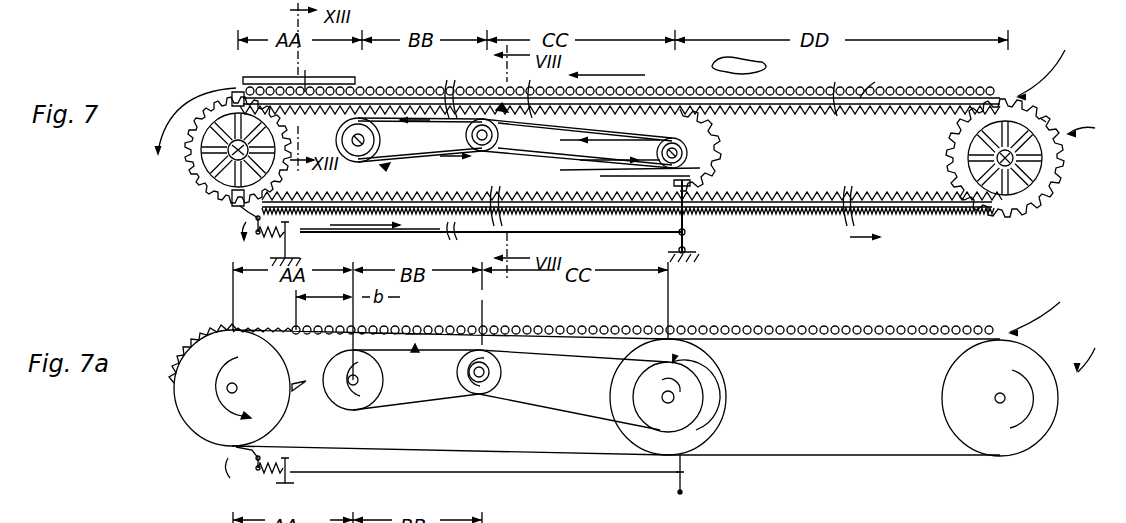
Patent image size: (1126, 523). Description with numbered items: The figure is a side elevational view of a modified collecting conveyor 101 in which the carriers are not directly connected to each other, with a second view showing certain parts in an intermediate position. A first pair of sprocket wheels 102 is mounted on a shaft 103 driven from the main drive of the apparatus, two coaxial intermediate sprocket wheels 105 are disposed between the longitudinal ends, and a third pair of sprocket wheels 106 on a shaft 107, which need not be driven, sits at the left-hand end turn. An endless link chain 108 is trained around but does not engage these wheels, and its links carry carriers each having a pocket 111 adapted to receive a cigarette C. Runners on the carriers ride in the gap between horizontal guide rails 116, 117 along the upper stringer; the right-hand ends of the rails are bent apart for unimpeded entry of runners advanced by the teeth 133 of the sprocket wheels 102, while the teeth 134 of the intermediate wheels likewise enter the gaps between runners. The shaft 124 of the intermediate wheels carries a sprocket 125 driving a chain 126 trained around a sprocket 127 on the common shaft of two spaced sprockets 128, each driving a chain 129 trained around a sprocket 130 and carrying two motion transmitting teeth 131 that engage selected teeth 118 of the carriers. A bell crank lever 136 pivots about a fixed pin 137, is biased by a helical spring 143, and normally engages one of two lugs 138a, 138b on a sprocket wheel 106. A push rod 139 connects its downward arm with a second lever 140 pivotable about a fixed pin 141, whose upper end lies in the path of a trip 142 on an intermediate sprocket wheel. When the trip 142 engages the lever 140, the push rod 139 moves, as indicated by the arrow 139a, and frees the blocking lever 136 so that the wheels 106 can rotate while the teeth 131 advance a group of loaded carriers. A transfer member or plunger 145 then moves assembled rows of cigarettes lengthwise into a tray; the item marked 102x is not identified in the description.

In FIG. 7, the collecting conveyor 101 is at (1088, 136).
In FIG. 7a, the collecting conveyor 101 is at (1086, 354).
In FIG. 7, the sprocket wheels 102 is at (1060, 158).
In FIG. 7a, the sprocket wheels 102 is at (1058, 408).
In FIG. 7, the article 102x is at (760, 66).
In FIG. 7, the shaft 103 is at (1015, 162).
In FIG. 7a, the shaft 103 is at (996, 396).
In FIG. 7, the intermediate sprocket wheels 105 is at (712, 126).
In FIG. 7a, the intermediate sprocket wheels 105 is at (718, 376).
In FIG. 7, the sprocket wheels 106 is at (192, 160).
In FIG. 7a, the sprocket wheels 106 is at (262, 377).
In FIG. 7, the shaft 107 is at (192, 185).
In FIG. 7a, the endless link chain 108 is at (832, 453).
In FIG. 7, the pocket 111 is at (262, 77).
In FIG. 7, the guide rail 116 is at (1018, 100).
In FIG. 7, the guide rail 117 is at (1046, 122).
In FIG. 7, the teeth 118 is at (310, 190).
In FIG. 7, the shaft 124 is at (690, 153).
In FIG. 7a, the shaft 124 is at (702, 400).
In FIG. 7, the sprocket 125 is at (700, 166).
In FIG. 7a, the sprocket 125 is at (690, 434).
In FIG. 7, the chain 126 is at (535, 152).
In FIG. 7a, the chain 126 is at (565, 360).
In FIG. 7, the sprocket 127 is at (493, 143).
In FIG. 7a, the sprocket 127 is at (492, 398).
In FIG. 7, the sprockets 128 is at (478, 150).
In FIG. 7a, the sprockets 128 is at (493, 356).
In FIG. 7, the chains 129 is at (415, 165).
In FIG. 7a, the chains 129 is at (470, 398).
In FIG. 7, the sprockets 130 is at (372, 140).
In FIG. 7a, the sprockets 130 is at (381, 375).
In FIG. 7, the motion transmitting projections or teeth 131 is at (386, 166).
In FIG. 7a, the motion transmitting projections or teeth 131 is at (415, 358).
In FIG. 7, the teeth 133 is at (946, 160).
In FIG. 7, the teeth 134 is at (700, 178).
In FIG. 7, the bell crank lever 136 is at (240, 212).
In FIG. 7a, the bell crank lever 136 is at (232, 452).
In FIG. 7, the fixed horizontal pin 137 is at (248, 230).
In FIG. 7, the lug 138a is at (230, 198).
In FIG. 7a, the lug 138a is at (172, 400).
In FIG. 7, the lug 138b is at (232, 95).
In FIG. 7a, the lug 138b is at (300, 393).
In FIG. 7, the push rod 139 is at (480, 236).
In FIG. 7a, the push rod 139 is at (368, 472).
In FIG. 7, the arrow 139a is at (354, 236).
In FIG. 7, the second lever 140 is at (686, 243).
In FIG. 7a, the second lever 140 is at (688, 474).
In FIG. 7, the fixed pin 141 is at (690, 255).
In FIG. 7a, the fixed pin 141 is at (683, 494).
In FIG. 7, the trip 142 is at (620, 162).
In FIG. 7a, the trip 142 is at (602, 422).
In FIG. 7, the helical spring 143 is at (270, 238).
In FIG. 7a, the helical spring 143 is at (262, 480).
In FIG. 7, the transfer member or plunger 145 is at (306, 78).
In FIG. 7, the cigarette C is at (876, 79).
In FIG. 7a, the cigarette C is at (1042, 308).